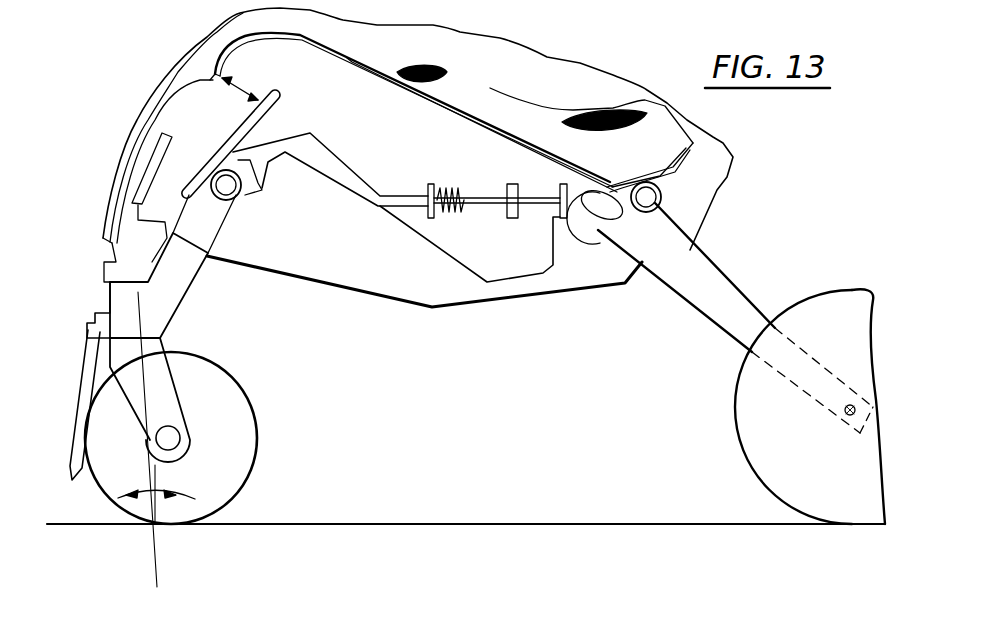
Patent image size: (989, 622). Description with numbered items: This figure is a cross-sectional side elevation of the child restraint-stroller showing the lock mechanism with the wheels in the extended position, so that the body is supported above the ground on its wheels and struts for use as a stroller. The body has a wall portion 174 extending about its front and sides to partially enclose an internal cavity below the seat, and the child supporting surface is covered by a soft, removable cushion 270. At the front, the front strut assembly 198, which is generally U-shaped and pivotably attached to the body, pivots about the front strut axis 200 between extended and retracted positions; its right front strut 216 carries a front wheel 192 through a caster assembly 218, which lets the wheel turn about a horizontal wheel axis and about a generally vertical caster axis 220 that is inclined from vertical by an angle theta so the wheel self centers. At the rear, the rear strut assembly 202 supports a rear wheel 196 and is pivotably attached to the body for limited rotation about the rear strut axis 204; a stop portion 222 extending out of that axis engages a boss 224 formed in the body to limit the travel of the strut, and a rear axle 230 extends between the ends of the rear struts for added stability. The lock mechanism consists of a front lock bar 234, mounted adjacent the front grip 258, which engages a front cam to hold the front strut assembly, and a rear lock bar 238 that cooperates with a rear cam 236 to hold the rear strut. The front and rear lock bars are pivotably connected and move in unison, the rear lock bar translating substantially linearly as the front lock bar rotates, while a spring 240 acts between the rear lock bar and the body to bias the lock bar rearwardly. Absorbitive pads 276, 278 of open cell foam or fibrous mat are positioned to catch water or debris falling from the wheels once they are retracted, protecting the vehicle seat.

The wall portion 174 is at (113, 205).
The front wheel 192 is at (255, 450).
The rear wheel 196 is at (737, 428).
The front strut assembly 198 is at (227, 226).
The front strut axis 200 is at (260, 190).
The rear strut assembly 202 is at (647, 272).
The rear strut axis 204 is at (583, 230).
The right front strut 216 is at (183, 270).
The caster assembly 218 is at (157, 317).
The caster axis 220 is at (147, 552).
The stop portion 222 is at (663, 203).
The boss 224 is at (660, 173).
The rear axle 230 is at (849, 418).
The front lock bar 234 is at (243, 130).
The rear cam 236 is at (578, 223).
The rear lock bar 238 is at (487, 210).
The spring 240 is at (433, 183).
The front grip 258 is at (208, 73).
The cushion 270 is at (490, 88).
The absorbitive pad 276 is at (70, 388).
The absorbitive pad 278 is at (167, 157).